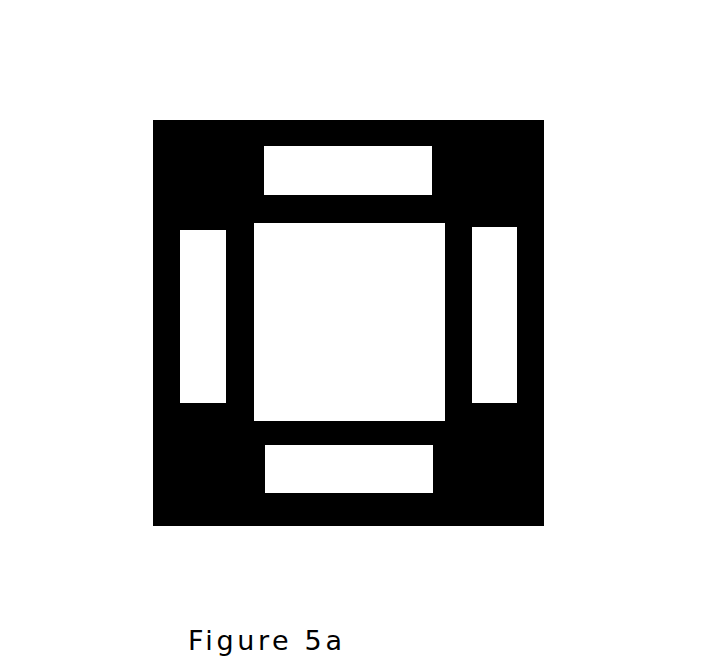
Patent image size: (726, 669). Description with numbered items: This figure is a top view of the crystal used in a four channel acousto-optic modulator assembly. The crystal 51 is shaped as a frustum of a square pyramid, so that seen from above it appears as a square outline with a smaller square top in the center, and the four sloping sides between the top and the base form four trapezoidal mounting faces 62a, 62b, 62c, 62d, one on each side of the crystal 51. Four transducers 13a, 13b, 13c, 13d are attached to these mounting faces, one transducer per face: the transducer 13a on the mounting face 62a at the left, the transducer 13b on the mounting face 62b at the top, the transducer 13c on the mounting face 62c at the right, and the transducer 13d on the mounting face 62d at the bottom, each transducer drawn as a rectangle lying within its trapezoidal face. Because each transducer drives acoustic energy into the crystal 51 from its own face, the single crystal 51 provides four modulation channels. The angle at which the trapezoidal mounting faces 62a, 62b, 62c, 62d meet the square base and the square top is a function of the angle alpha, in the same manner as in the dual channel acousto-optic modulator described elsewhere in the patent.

The crystal 51 is at (138, 500).
The mounting face 62a is at (152, 178).
The mounting face 62b is at (472, 120).
The mounting face 62c is at (544, 177).
The mounting face 62d is at (502, 526).
The transducer 13a is at (195, 288).
The transducer 13b is at (339, 168).
The transducer 13c is at (503, 308).
The transducer 13d is at (349, 464).